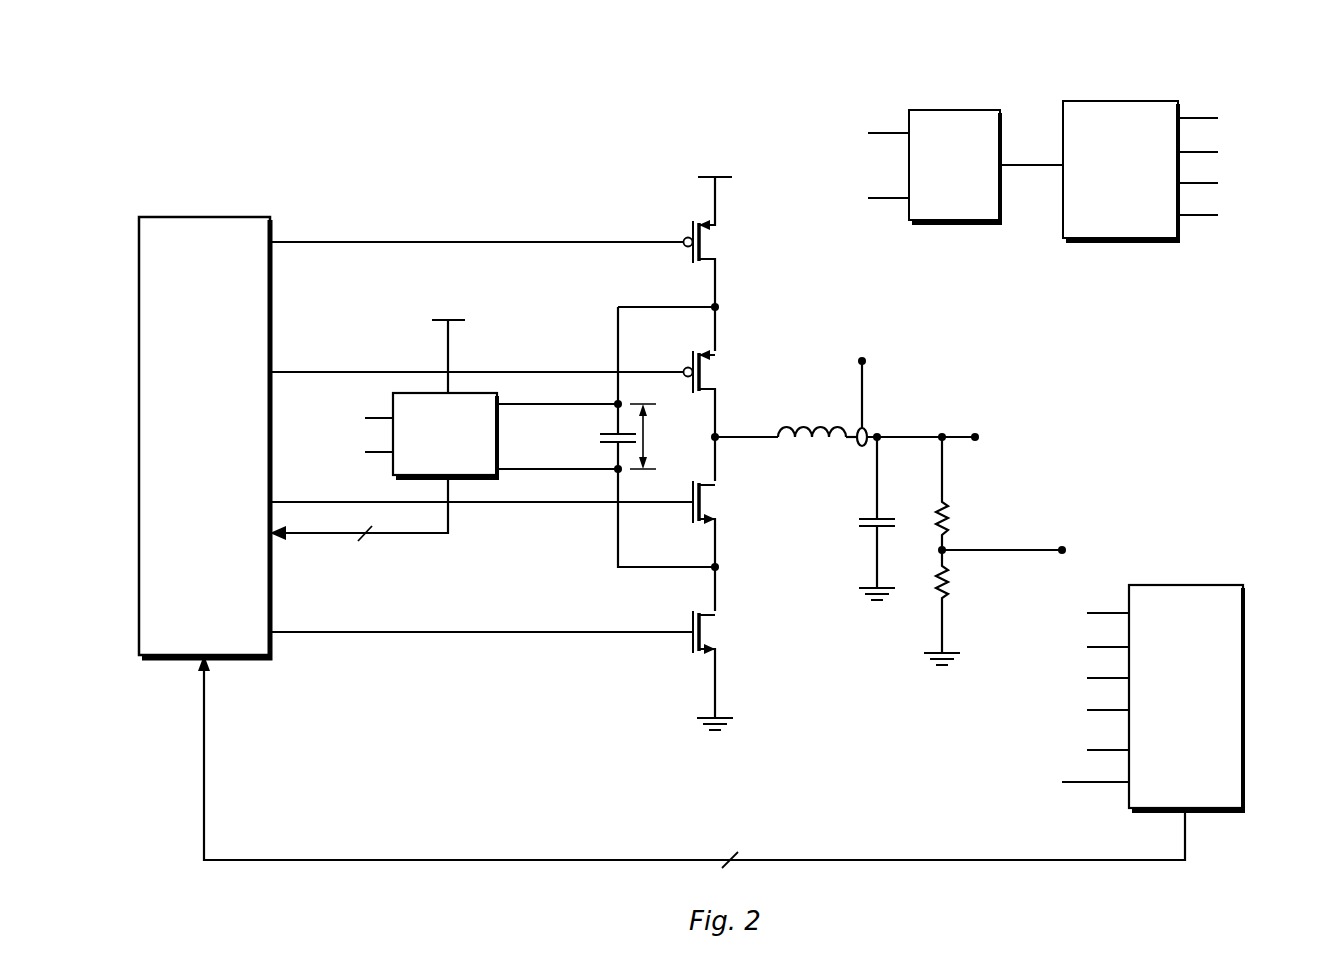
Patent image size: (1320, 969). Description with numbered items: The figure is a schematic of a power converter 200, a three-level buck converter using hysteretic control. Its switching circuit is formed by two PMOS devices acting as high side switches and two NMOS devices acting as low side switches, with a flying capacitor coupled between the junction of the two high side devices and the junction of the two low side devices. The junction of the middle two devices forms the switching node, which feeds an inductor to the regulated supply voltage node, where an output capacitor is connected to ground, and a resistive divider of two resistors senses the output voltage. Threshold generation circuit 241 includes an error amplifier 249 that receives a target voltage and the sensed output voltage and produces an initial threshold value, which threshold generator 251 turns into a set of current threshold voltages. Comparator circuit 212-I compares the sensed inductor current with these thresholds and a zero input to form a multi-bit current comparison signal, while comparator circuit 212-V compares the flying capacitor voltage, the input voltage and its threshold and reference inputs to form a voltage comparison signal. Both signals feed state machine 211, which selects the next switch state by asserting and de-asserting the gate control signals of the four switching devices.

The power converter 200 is at (646, 54).
The state machine 211 is at (204, 437).
The comparator circuit 212-V is at (471, 387).
The comparator circuit 212-I is at (1129, 698).
The threshold generation circuit 241 is at (1032, 78).
The error amplifier 249 is at (901, 166).
The threshold generator 251 is at (1168, 171).